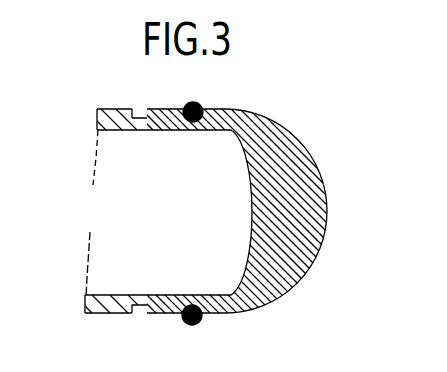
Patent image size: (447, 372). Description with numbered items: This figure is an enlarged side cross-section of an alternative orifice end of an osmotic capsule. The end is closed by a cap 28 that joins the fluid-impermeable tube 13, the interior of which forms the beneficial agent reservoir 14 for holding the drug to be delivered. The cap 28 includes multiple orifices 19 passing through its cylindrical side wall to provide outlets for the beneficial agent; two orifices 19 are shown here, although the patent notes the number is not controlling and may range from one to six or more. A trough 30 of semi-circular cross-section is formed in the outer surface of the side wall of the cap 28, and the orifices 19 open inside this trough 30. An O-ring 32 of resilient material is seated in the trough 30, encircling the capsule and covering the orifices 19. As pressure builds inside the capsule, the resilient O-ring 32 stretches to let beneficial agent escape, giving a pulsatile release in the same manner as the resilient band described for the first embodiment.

The tube 13 is at (112, 140).
The beneficial agent reservoir 14 is at (115, 271).
The orifices 19 is at (192, 131).
The cap 28 is at (300, 152).
The trough 30 is at (203, 106).
The O-ring 32 is at (183, 104).